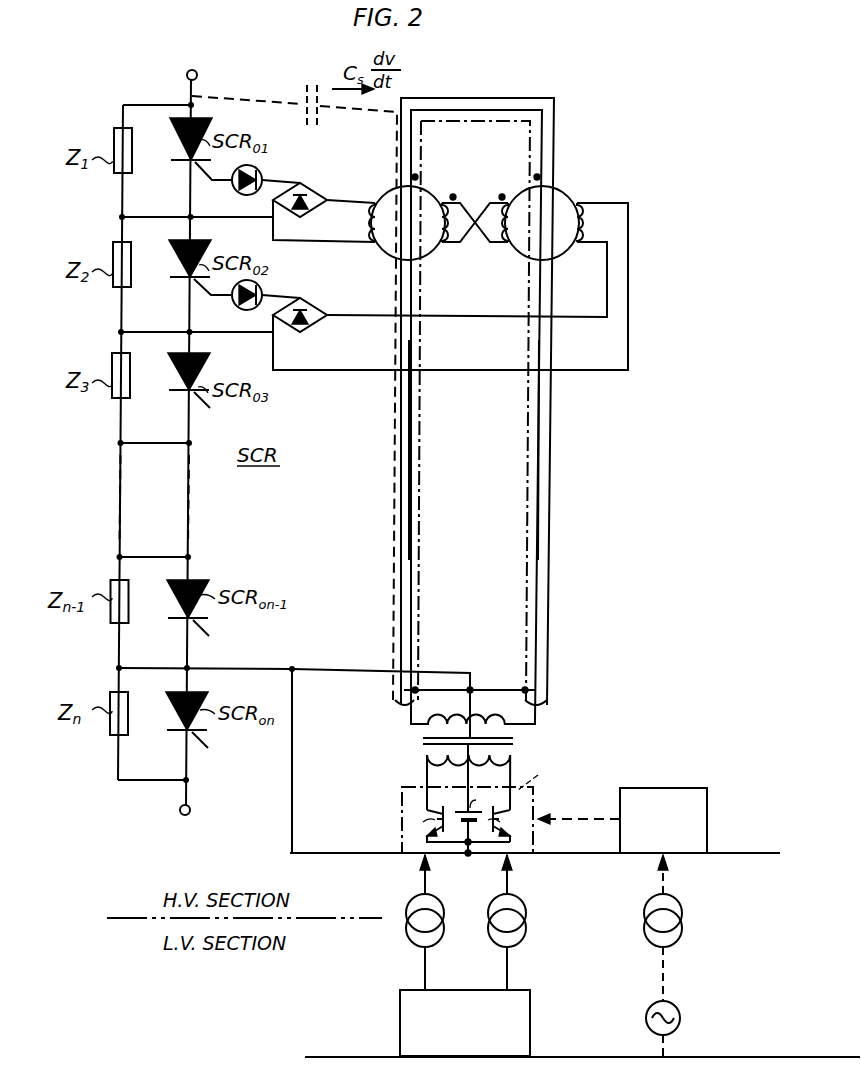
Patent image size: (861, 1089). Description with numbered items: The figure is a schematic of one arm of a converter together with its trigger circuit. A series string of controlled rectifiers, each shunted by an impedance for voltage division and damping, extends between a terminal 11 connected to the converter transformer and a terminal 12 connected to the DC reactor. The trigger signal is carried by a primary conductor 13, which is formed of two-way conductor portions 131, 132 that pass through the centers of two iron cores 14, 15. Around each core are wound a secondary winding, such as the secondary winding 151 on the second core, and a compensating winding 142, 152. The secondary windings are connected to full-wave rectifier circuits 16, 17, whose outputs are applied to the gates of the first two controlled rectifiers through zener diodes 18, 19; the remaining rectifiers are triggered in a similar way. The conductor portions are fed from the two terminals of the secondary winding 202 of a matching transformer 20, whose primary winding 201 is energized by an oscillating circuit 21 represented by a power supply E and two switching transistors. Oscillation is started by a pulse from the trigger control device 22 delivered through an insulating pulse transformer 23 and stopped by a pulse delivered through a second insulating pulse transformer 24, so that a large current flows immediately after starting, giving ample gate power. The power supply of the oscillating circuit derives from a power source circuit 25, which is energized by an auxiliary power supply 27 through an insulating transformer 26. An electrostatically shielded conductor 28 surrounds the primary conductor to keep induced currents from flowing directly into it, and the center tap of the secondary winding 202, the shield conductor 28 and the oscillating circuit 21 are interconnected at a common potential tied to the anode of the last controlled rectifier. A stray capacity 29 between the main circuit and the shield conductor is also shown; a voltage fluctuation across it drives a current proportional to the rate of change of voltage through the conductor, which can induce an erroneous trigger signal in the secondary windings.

The terminal 11 is at (198, 73).
The terminal 12 is at (191, 808).
The primary conductor 13 is at (480, 110).
The iron core 14 is at (423, 218).
The iron core 15 is at (560, 218).
The full-wave rectifier circuit 16 is at (354, 199).
The full-wave rectifier circuit 17 is at (354, 304).
The zener diode 18 is at (237, 196).
The zener diode 19 is at (237, 311).
The matching transformer 20 is at (518, 741).
The oscillating circuit 21 is at (533, 806).
The trigger control device 22 is at (531, 1006).
The insulating pulse transformer 23 is at (444, 916).
The insulating pulse transformer 24 is at (526, 916).
The power source circuit 25 is at (708, 831).
The insulating transformer 26 is at (682, 916).
The auxiliary power supply 27 is at (670, 1003).
The electrostatically shielded conductor 28 is at (520, 98).
The stray capacity 29 is at (318, 122).
The conductor portion 131 is at (409, 460).
The conductor portion 132 is at (539, 460).
The compensating winding 142 is at (446, 235).
The secondary winding 151 is at (583, 223).
The compensating winding 152 is at (504, 235).
The primary winding 201 is at (425, 768).
The secondary winding 202 is at (478, 718).